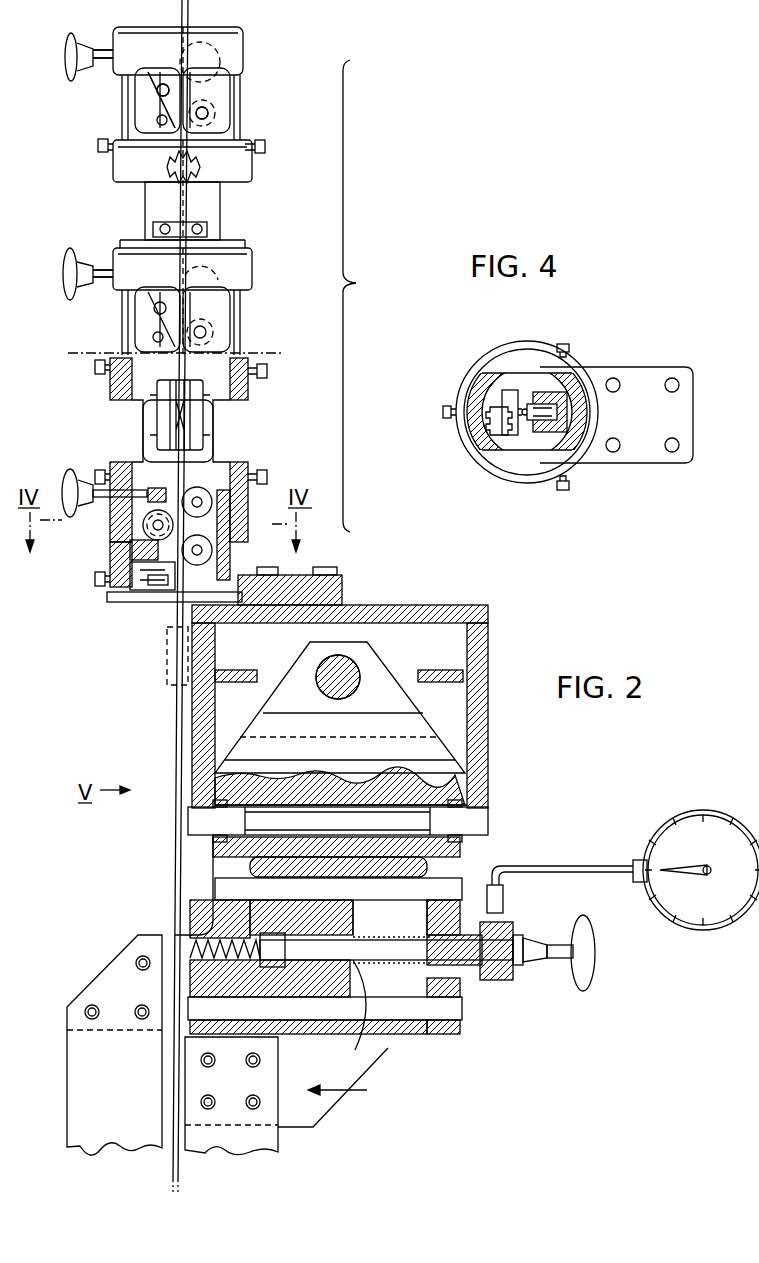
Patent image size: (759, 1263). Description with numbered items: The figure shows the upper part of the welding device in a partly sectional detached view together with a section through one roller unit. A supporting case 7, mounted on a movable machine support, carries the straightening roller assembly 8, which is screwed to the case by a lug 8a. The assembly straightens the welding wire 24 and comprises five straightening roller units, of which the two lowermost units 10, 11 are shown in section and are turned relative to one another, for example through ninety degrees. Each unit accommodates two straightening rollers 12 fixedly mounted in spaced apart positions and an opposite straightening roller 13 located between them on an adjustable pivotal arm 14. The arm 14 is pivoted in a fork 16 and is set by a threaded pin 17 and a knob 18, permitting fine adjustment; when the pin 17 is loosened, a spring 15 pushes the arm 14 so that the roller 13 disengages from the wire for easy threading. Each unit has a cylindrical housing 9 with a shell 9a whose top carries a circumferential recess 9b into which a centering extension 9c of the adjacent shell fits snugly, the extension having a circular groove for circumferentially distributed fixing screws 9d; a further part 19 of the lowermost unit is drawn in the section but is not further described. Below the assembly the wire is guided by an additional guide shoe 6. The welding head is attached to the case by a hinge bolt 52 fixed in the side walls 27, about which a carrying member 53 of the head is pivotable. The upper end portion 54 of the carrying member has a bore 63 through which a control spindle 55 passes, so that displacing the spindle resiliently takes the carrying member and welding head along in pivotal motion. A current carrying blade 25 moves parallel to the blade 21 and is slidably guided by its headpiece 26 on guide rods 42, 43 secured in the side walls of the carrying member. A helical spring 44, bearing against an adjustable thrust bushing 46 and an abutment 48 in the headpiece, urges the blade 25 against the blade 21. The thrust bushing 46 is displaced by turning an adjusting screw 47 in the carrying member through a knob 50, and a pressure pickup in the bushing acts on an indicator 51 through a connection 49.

In FIG. 2, the guide shoe 6 is at (167, 680).
In FIG. 2, the supporting case 7 is at (490, 623).
In FIG. 2, the straightening roller assembly 8 is at (359, 296).
In FIG. 2, the lug 8a is at (345, 590).
In FIG. 4, the lug 8a is at (680, 402).
In FIG. 4, the cylindrical housing 9 is at (532, 485).
In FIG. 2, the shell 9a is at (245, 44).
In FIG. 2, the circumferential recess 9b is at (238, 470).
In FIG. 2, the centering extension 9c is at (125, 465).
In FIG. 2, the fixing screws 9d is at (266, 150).
In FIG. 2, the straightening roller unit 10 is at (252, 101).
In FIG. 2, the straightening roller unit 11 is at (228, 217).
In FIG. 2, the straightening rollers 12 is at (213, 123).
In FIG. 4, the straightening rollers 12 is at (562, 384).
In FIG. 2, the opposite straightening roller 13 is at (145, 305).
In FIG. 4, the opposite straightening roller 13 is at (488, 415).
In FIG. 2, the pivotal arm 14 is at (150, 113).
In FIG. 4, the pivotal arm 14 is at (512, 400).
In FIG. 2, the spring 15 is at (135, 602).
In FIG. 2, the fork 16 is at (125, 570).
In FIG. 2, the threaded pin 17 is at (103, 58).
In FIG. 2, the knob 18 is at (65, 62).
In FIG. 2, the pin 19 is at (160, 605).
In FIG. 2, the blade 21 is at (72, 1068).
In FIG. 2, the welding wire 24 is at (173, 858).
In FIG. 4, the welding wire 24 is at (527, 405).
In FIG. 2, the current carrying blade 25 is at (278, 1068).
In FIG. 2, the headpiece 26 is at (378, 1040).
In FIG. 2, the side walls 27 is at (192, 748).
In FIG. 2, the guide rod 42 is at (440, 888).
In FIG. 2, the guide rod 43 is at (397, 1012).
In FIG. 2, the helical spring 44 is at (457, 985).
In FIG. 2, the thrust bushing 46 is at (470, 975).
In FIG. 2, the adjusting screw 47 is at (178, 960).
In FIG. 2, the abutment 48 is at (372, 1042).
In FIG. 2, the connection 49 is at (505, 980).
In FIG. 2, the knob 50 is at (598, 952).
In FIG. 2, the indicator 51 is at (714, 811).
In FIG. 2, the hinge bolt 52 is at (190, 820).
In FIG. 2, the carrying member 53 is at (205, 905).
In FIG. 2, the upper end portion 54 is at (407, 727).
In FIG. 2, the control spindle 55 is at (348, 686).
In FIG. 2, the bore 63 is at (358, 662).